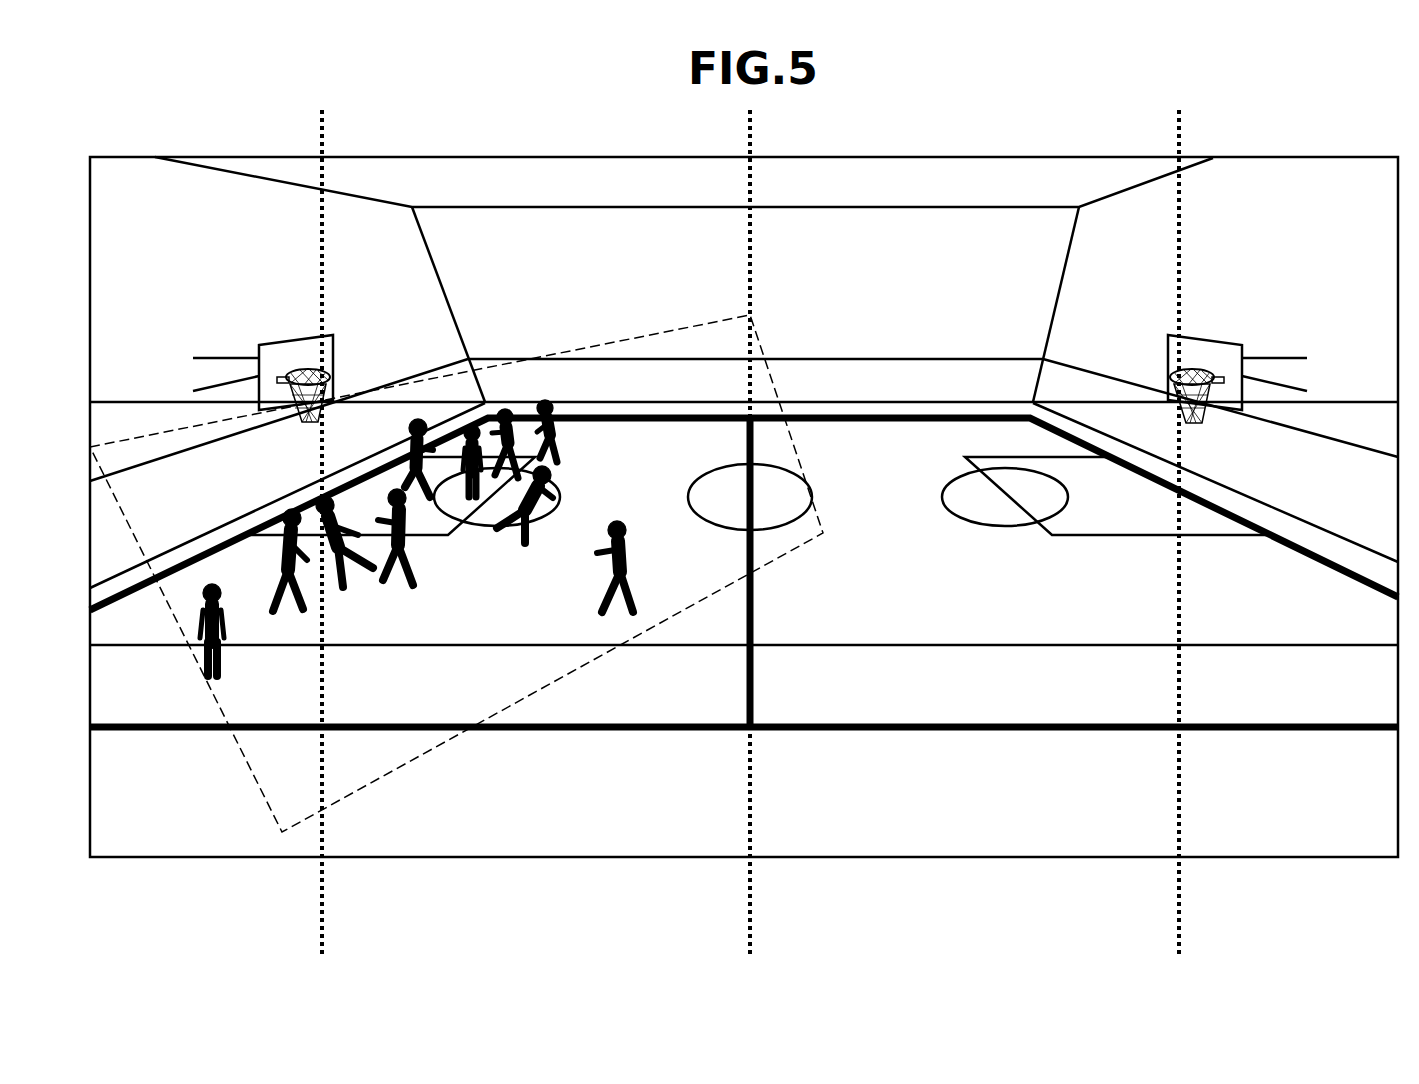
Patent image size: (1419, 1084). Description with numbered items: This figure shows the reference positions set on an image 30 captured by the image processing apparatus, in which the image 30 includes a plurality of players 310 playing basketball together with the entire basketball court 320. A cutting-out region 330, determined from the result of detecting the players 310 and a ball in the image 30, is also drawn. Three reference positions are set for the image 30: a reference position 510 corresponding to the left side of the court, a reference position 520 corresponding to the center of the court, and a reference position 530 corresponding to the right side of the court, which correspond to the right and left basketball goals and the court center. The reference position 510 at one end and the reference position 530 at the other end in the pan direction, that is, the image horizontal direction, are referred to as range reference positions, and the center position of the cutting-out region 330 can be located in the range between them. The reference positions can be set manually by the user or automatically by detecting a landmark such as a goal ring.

The image 30 is at (384, 157).
The players 310 is at (592, 577).
The basketball court 320 is at (960, 732).
The cutting-out region 330 is at (762, 343).
The reference position 510 is at (324, 902).
The reference position 520 is at (752, 902).
The reference position 530 is at (1181, 902).